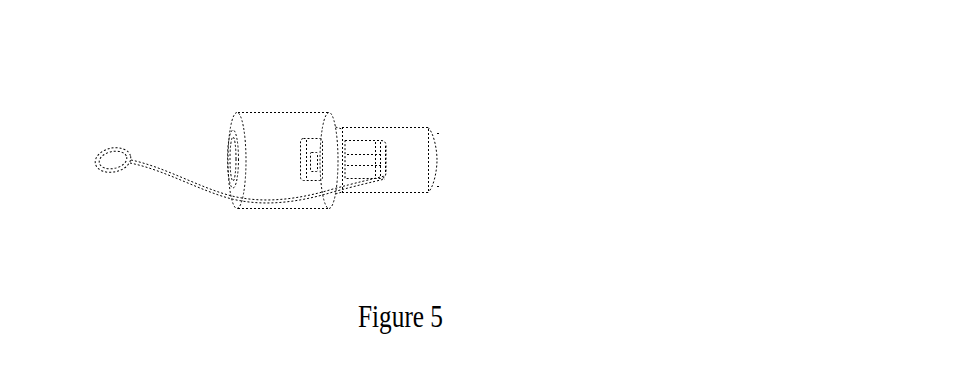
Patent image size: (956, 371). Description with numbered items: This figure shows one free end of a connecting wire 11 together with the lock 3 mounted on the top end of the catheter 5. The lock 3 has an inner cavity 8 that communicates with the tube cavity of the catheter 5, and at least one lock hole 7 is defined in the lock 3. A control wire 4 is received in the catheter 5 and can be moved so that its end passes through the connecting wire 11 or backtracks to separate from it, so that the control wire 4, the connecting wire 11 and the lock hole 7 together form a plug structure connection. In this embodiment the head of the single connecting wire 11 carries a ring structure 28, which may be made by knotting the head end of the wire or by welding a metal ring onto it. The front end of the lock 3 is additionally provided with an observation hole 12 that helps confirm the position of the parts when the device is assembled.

The lock 3 is at (258, 112).
The inner cavity 8 is at (425, 55).
The control wire 4 is at (362, 155).
The lock hole 7 is at (377, 179).
The catheter 5 is at (441, 132).
The observation hole 12 is at (311, 140).
The connecting wire 11 is at (272, 200).
The ring structure 28 is at (120, 173).